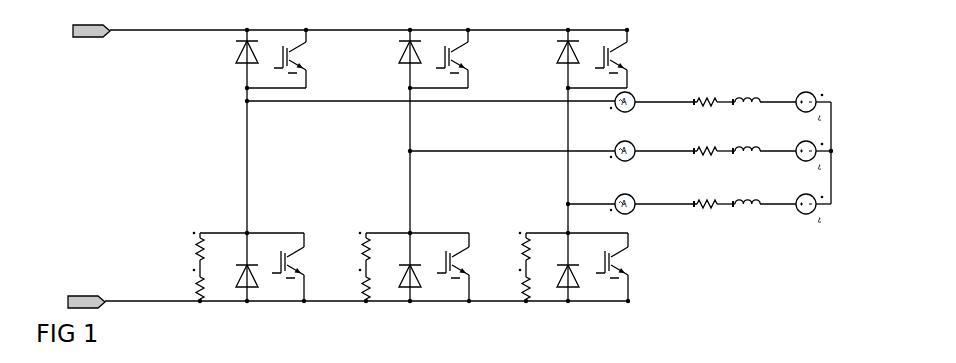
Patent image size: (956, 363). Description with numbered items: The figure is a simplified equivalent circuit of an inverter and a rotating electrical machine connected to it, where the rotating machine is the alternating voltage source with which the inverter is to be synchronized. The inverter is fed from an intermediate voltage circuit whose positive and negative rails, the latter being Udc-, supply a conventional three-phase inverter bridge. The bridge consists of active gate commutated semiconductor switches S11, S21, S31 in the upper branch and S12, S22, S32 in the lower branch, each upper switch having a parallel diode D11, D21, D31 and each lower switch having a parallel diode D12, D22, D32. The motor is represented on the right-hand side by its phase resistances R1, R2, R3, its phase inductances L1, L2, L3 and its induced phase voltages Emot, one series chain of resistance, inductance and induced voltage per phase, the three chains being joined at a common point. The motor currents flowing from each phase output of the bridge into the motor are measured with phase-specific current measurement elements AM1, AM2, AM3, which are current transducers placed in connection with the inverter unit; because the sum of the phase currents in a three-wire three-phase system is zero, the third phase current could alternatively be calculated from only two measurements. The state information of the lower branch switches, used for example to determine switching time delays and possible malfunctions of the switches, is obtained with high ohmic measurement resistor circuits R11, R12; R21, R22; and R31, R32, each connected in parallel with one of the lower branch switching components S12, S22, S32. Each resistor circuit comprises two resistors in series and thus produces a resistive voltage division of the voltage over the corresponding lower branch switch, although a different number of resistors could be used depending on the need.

The negative intermediate circuit voltage Udc- is at (332, 302).
The upper branch parallel diode D11 is at (234, 52).
The upper branch parallel diode D21 is at (397, 52).
The upper branch parallel diode D31 is at (555, 52).
The upper branch semiconductor switch S11 is at (283, 59).
The upper branch semiconductor switch S21 is at (445, 59).
The upper branch semiconductor switch S31 is at (604, 59).
The lower branch parallel diode D12 is at (234, 278).
The lower branch parallel diode D22 is at (397, 278).
The lower branch parallel diode D32 is at (555, 278).
The lower branch semiconductor switch S12 is at (295, 267).
The lower branch semiconductor switch S22 is at (461, 267).
The lower branch semiconductor switch S32 is at (618, 267).
The measurement resistor R11 is at (187, 255).
The measurement resistor R12 is at (187, 289).
The measurement resistor R21 is at (350, 255).
The measurement resistor R22 is at (350, 289).
The measurement resistor R31 is at (511, 255).
The measurement resistor R32 is at (511, 289).
The current measurement element AM1 is at (653, 112).
The current measurement element AM2 is at (653, 161).
The current measurement element AM3 is at (653, 213).
The phase resistance R1 is at (714, 112).
The phase resistance R2 is at (714, 161).
The phase resistance R3 is at (714, 214).
The phase inductance L1 is at (764, 112).
The phase inductance L2 is at (764, 161).
The phase inductance L3 is at (764, 213).
The induced phase voltage Emot is at (832, 157).